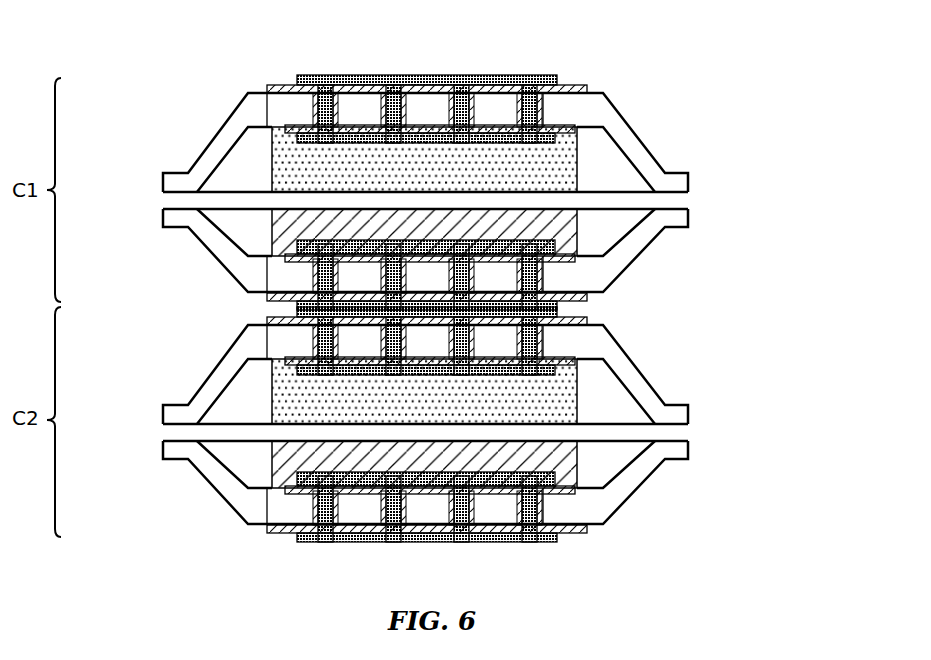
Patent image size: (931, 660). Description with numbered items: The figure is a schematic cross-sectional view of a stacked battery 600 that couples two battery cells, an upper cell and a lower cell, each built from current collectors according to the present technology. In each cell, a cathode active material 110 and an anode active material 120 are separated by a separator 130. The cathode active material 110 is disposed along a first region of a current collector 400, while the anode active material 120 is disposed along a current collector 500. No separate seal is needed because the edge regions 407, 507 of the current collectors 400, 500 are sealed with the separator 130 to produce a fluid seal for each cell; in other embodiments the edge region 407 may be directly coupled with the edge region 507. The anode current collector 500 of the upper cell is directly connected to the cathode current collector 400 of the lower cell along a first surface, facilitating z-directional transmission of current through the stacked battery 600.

The stacked battery 600 is at (196, 70).
The cathode active material 110 is at (272, 397).
The anode active material 120 is at (272, 452).
The separator 130 is at (163, 198).
The current collector 400 is at (521, 75).
The edge region 407 is at (685, 170).
The current collector 500 is at (615, 284).
The edge region 507 is at (688, 226).